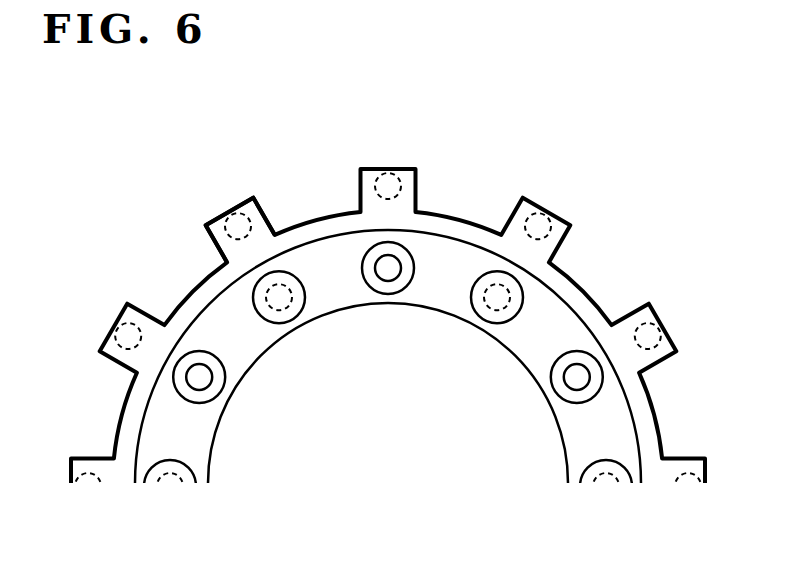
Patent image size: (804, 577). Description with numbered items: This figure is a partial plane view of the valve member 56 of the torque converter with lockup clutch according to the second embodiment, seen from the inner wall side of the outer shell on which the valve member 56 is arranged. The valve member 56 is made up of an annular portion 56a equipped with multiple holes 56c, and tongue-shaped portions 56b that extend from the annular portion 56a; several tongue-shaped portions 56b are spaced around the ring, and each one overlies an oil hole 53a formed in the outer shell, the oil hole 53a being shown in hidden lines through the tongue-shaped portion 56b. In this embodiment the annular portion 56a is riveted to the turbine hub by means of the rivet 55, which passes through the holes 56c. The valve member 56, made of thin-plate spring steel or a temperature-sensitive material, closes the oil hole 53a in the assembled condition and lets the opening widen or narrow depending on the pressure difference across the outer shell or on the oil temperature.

The valve member 56 is at (589, 292).
The annular portion 56a is at (205, 429).
The tongue-shaped portion 56b is at (229, 217).
The holes 56c is at (282, 306).
The rivet 55 is at (282, 303).
The oil hole 53a is at (243, 209).